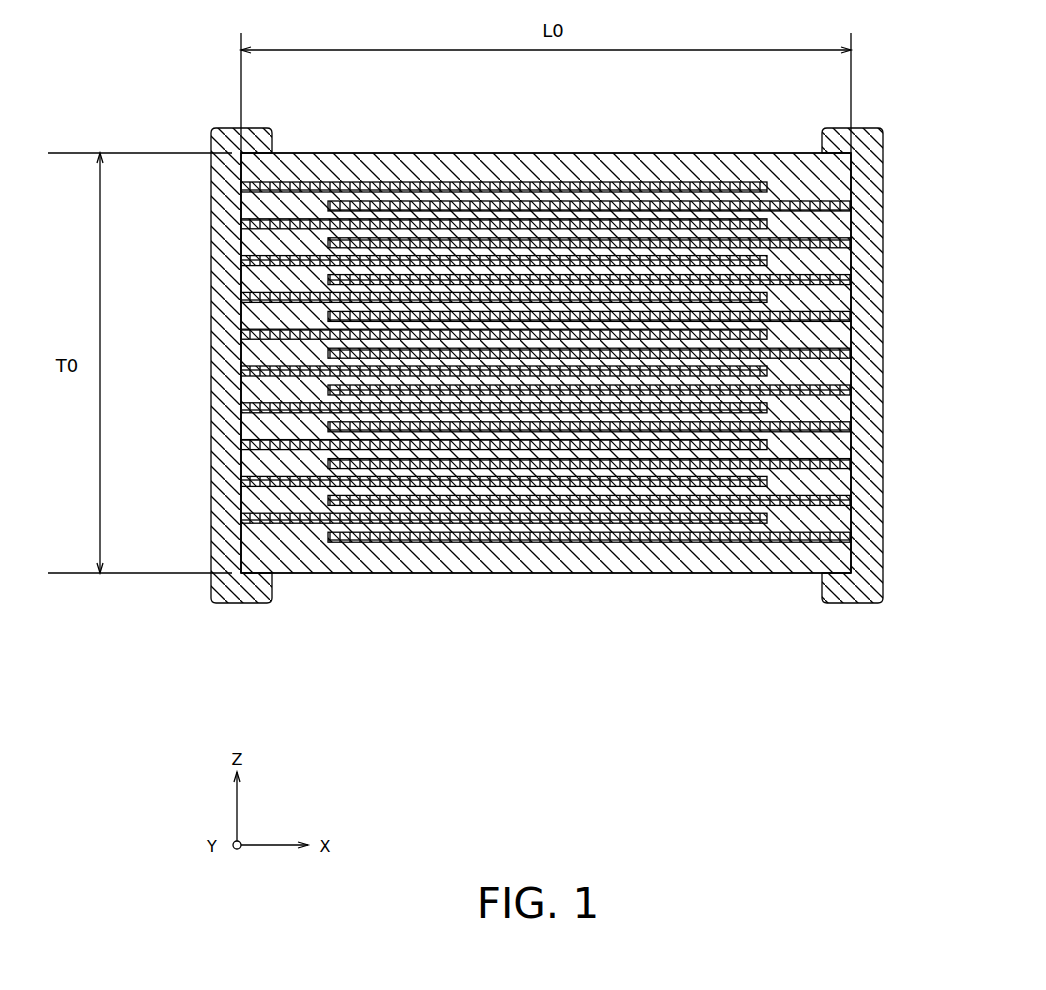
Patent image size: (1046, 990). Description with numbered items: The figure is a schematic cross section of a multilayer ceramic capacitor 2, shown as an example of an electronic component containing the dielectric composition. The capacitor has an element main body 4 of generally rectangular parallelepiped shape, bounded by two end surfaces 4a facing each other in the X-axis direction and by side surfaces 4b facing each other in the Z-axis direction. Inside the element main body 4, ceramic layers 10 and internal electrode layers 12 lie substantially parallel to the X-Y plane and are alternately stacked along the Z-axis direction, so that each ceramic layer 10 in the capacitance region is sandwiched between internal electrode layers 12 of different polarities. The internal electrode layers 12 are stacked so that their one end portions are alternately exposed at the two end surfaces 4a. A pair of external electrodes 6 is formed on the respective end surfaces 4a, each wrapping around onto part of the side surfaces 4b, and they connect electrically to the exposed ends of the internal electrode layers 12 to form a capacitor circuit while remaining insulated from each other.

The multilayer ceramic capacitor 2 is at (534, 370).
The element main body 4 is at (534, 371).
The end surface 4a is at (238, 398).
The side surface 4b is at (393, 152).
The external electrode 6 is at (870, 128).
The ceramic layer 10 is at (490, 182).
The internal electrode layer 12 is at (605, 182).